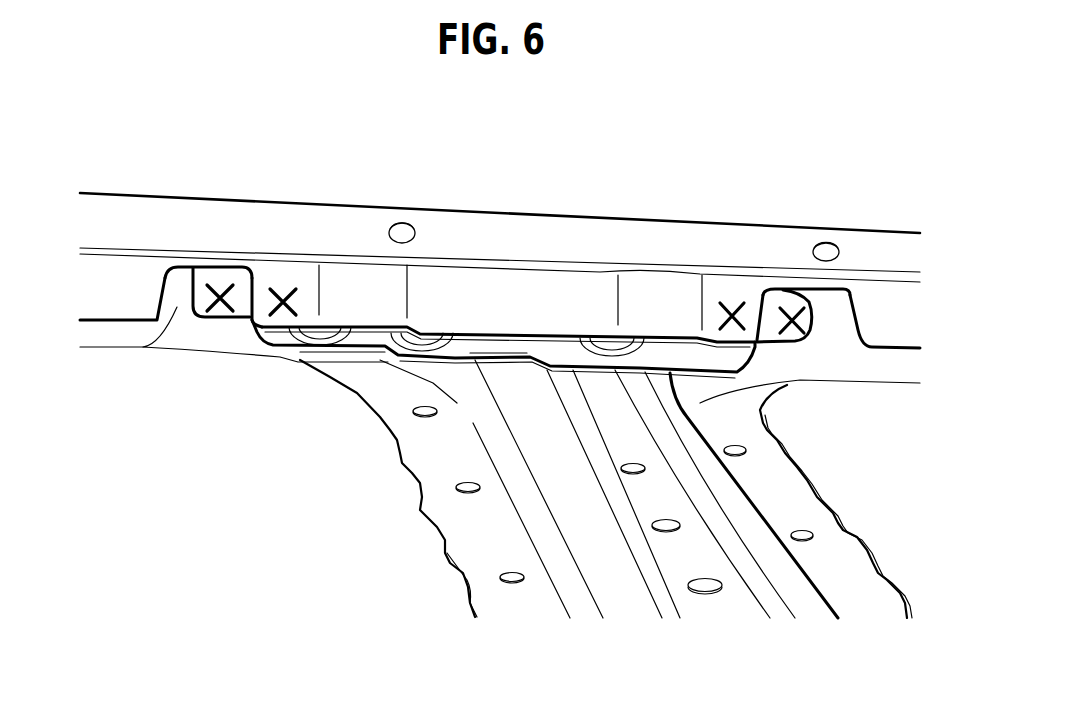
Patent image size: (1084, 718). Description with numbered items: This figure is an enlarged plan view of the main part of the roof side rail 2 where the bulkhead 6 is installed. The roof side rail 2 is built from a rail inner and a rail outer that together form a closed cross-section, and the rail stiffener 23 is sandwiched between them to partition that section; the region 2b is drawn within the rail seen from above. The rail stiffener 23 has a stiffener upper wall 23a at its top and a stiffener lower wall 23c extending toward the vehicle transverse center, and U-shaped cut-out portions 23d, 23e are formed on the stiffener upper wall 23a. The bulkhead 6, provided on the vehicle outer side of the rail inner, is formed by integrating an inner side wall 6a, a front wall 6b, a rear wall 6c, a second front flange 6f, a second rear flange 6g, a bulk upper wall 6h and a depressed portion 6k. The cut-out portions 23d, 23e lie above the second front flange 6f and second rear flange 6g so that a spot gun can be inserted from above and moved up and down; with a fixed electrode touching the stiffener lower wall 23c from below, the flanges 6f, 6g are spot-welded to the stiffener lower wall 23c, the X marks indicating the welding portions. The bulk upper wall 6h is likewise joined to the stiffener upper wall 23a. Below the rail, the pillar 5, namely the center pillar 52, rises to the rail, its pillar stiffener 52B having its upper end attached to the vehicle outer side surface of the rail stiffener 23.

The roof side rail 2 is at (500, 255).
The panel portion 2b is at (467, 227).
The rail stiffener 23 is at (500, 262).
The stiffener upper wall 23a is at (558, 293).
The stiffener lower wall 23c is at (148, 348).
The cut-out portion 23d is at (842, 315).
The cut-out portion 23e is at (182, 282).
The bulkhead 6 is at (521, 365).
The inner side wall 6a is at (563, 350).
The front wall 6b is at (757, 350).
The rear wall 6c is at (247, 310).
The second front flange 6f is at (771, 313).
The second rear flange 6g is at (220, 282).
The bulk upper wall 6h is at (650, 290).
The depressed portion 6k is at (528, 340).
The pillar 5 is at (606, 490).
The center pillar 52 is at (606, 490).
The pillar stiffener 52B is at (463, 595).